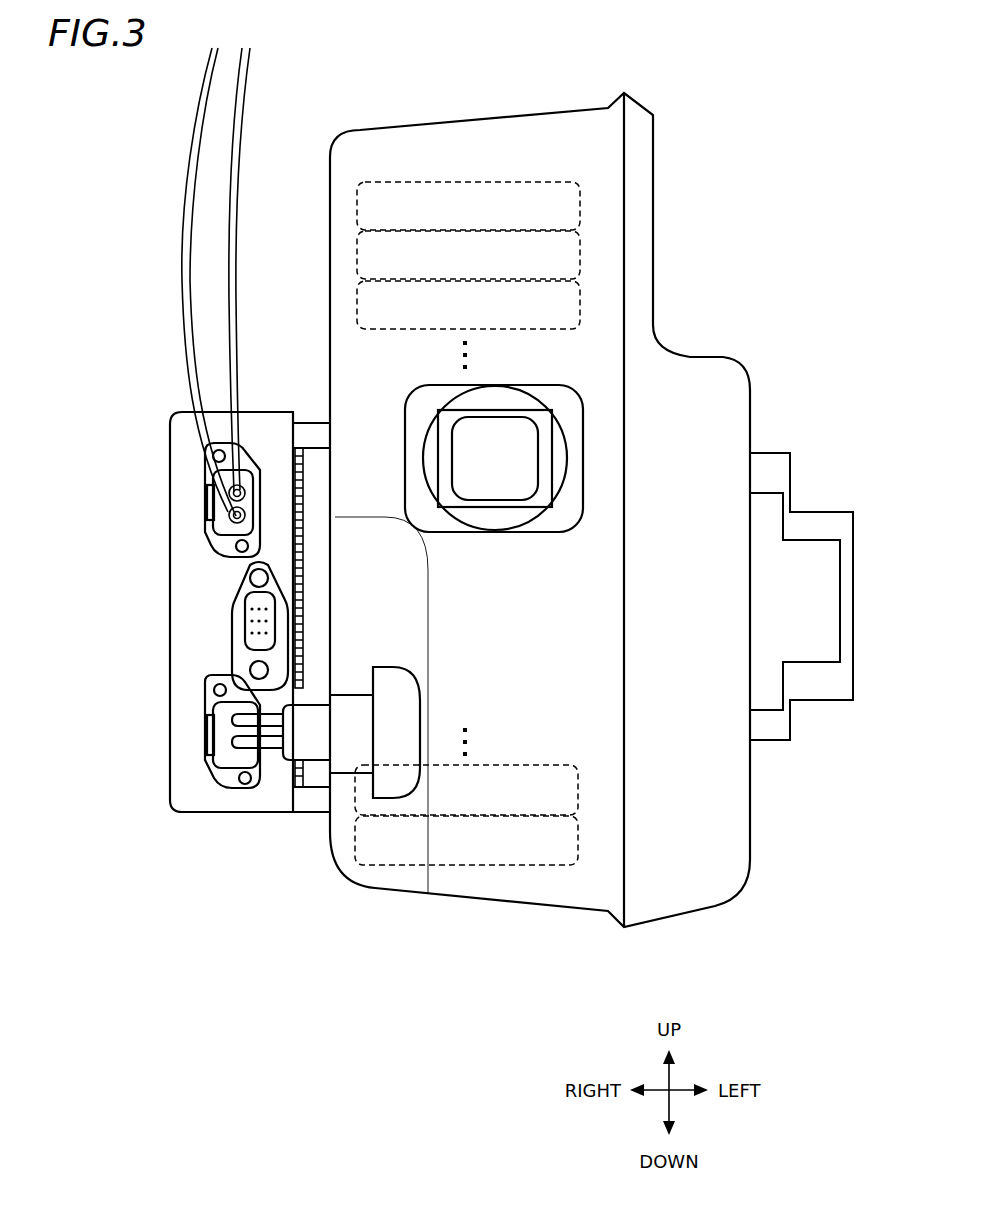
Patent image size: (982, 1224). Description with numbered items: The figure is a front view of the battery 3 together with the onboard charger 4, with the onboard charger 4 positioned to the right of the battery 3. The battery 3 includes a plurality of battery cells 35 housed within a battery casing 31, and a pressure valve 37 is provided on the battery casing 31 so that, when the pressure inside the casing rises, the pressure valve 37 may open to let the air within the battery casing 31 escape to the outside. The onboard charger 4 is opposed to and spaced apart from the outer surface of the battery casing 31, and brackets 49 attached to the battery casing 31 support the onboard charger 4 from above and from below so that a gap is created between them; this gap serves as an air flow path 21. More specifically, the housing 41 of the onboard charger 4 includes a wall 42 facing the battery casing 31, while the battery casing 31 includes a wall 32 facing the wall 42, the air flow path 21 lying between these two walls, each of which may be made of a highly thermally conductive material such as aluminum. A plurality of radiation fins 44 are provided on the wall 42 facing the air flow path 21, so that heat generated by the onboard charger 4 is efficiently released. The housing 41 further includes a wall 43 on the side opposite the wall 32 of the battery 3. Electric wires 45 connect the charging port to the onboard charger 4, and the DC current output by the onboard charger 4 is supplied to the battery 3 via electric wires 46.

The battery 3 is at (479, 116).
The battery casing 31 is at (518, 152).
The wall (second wall) 32 is at (333, 467).
The battery cells 35 is at (583, 195).
The pressure valve 37 is at (512, 485).
The onboard charger 4 is at (165, 408).
The housing 41 is at (185, 583).
The wall (first wall) 42 is at (290, 456).
The wall (third wall) 43 is at (170, 645).
The radiation fins 44 is at (305, 782).
The electric wires 45 is at (183, 273).
The electric wires 46 is at (276, 750).
The brackets 49 is at (318, 440).
The air flow path 21 is at (306, 440).